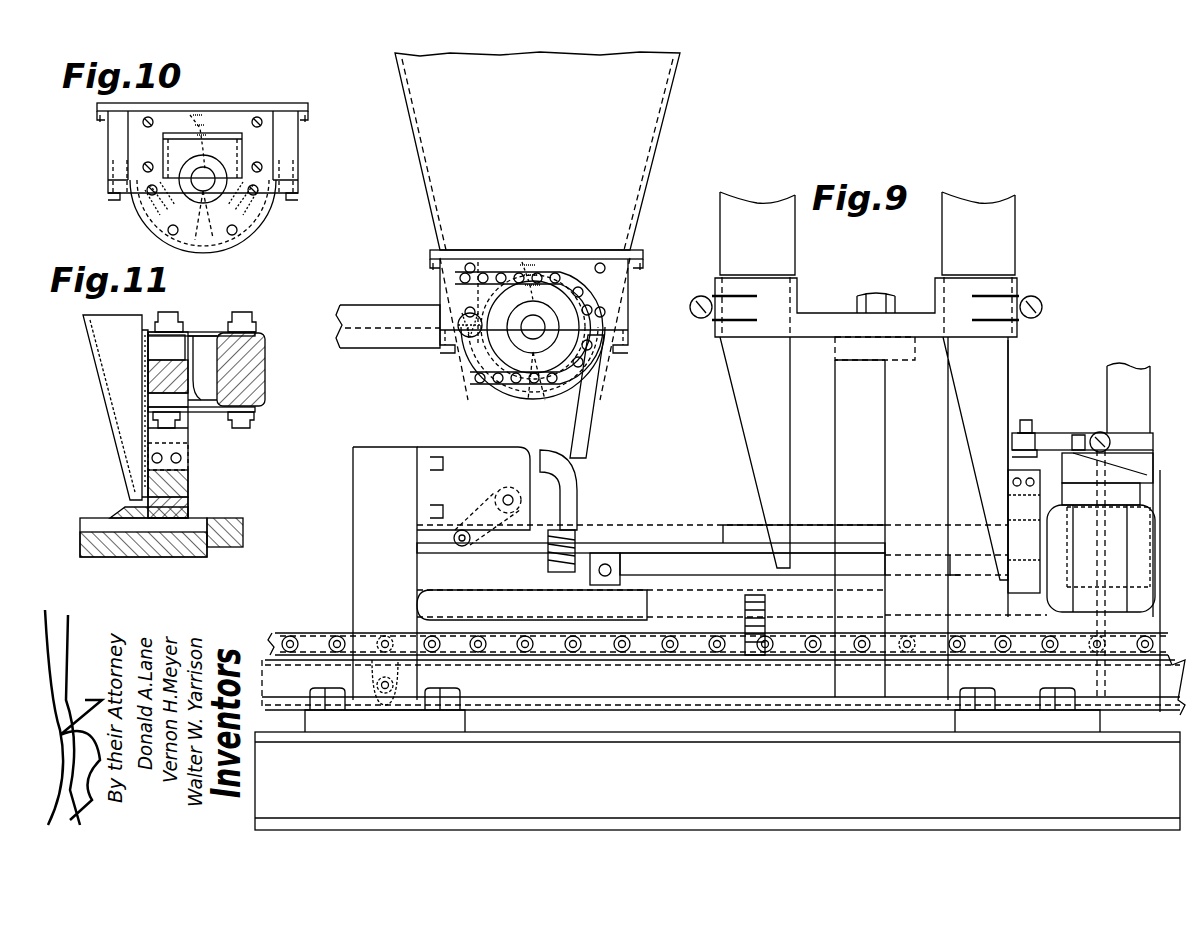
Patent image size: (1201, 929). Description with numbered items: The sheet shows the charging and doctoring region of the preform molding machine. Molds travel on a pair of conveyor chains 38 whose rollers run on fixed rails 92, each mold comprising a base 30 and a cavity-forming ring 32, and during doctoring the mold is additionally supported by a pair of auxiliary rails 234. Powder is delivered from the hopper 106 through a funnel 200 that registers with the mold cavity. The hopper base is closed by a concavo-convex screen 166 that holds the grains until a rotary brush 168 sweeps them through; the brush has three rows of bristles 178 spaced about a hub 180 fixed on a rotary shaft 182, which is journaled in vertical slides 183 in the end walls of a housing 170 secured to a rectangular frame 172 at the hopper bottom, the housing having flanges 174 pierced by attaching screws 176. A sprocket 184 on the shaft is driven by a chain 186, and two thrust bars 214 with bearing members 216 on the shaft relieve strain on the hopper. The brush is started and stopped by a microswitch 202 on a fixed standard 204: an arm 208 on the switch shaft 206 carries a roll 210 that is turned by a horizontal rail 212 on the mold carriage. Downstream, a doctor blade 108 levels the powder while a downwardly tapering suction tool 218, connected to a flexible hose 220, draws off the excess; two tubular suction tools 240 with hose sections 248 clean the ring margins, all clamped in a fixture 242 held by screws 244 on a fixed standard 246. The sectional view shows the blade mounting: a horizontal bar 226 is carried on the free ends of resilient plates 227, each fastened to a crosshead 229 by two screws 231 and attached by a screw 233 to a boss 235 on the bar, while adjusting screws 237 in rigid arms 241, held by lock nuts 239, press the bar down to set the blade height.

In FIG. 11, the base 30 is at (140, 545).
In FIG. 11, the ring 32 is at (238, 530).
In FIG. 9, the chains 38 is at (291, 625).
In FIG. 9, the fixed rails 92 is at (622, 686).
In FIG. 9, the hopper 106 is at (650, 106).
In FIG. 11, the doctor blade 108 is at (122, 512).
In FIG. 9, the doctor blade 108 is at (1008, 588).
In FIG. 10, the screen 166 is at (255, 238).
In FIG. 9, the screen 166 is at (600, 393).
In FIG. 10, the rotary brush 168 is at (223, 123).
In FIG. 9, the rotary brush 168 is at (552, 262).
In FIG. 10, the housing 170 is at (307, 152).
In FIG. 9, the housing 170 is at (503, 262).
In FIG. 10, the rectangular frame 172 is at (293, 107).
In FIG. 9, the rectangular frame 172 is at (638, 251).
In FIG. 10, the flanges 174 is at (106, 115).
In FIG. 9, the flanges 174 is at (437, 266).
In FIG. 10, the attaching screws 176 is at (110, 126).
In FIG. 9, the attaching screws 176 is at (440, 280).
In FIG. 10, the bristles 178 is at (188, 112).
In FIG. 9, the bristles 178 is at (517, 258).
In FIG. 10, the hub 180 is at (195, 230).
In FIG. 9, the hub 180 is at (600, 300).
In FIG. 10, the rotary shaft 182 is at (207, 185).
In FIG. 9, the rotary shaft 182 is at (545, 330).
In FIG. 10, the vertical slides 183 is at (172, 153).
In FIG. 9, the sprocket 184 is at (476, 258).
In FIG. 9, the chain 186 is at (492, 386).
In FIG. 9, the funnel 200 is at (580, 448).
In FIG. 9, the microswitch 202 is at (582, 492).
In FIG. 9, the fixed standard 204 is at (373, 455).
In FIG. 9, the shaft 206 is at (509, 487).
In FIG. 9, the arm 208 is at (532, 604).
In FIG. 9, the roll 210 is at (452, 548).
In FIG. 9, the horizontal rail 212 is at (640, 545).
In FIG. 9, the thrust bars 214 is at (358, 338).
In FIG. 9, the bearing members 216 is at (466, 345).
In FIG. 11, the suction tool 218 is at (98, 380).
In FIG. 9, the suction tool 218 is at (995, 418).
In FIG. 9, the flexible hose 220 is at (1003, 234).
In FIG. 11, the horizontal bar 226 is at (190, 440).
In FIG. 11, the resilient plates 227 is at (207, 335).
In FIG. 11, the crosshead 229 is at (265, 345).
In FIG. 11, the screws 231 is at (254, 318).
In FIG. 11, the screw 233 is at (170, 325).
In FIG. 9, the auxiliary rails 234 is at (687, 712).
In FIG. 11, the boss 235 is at (148, 385).
In FIG. 11, the screws 237 is at (198, 335).
In FIG. 11, the lock nuts 239 is at (165, 318).
In FIG. 9, the tubular suction tools 240 is at (760, 470).
In FIG. 11, the rigid arm 241 is at (205, 350).
In FIG. 9, the fixture 242 is at (820, 330).
In FIG. 9, the screws 244 is at (870, 294).
In FIG. 9, the fixed standard 246 is at (897, 408).
In FIG. 9, the hose sections 248 is at (785, 257).